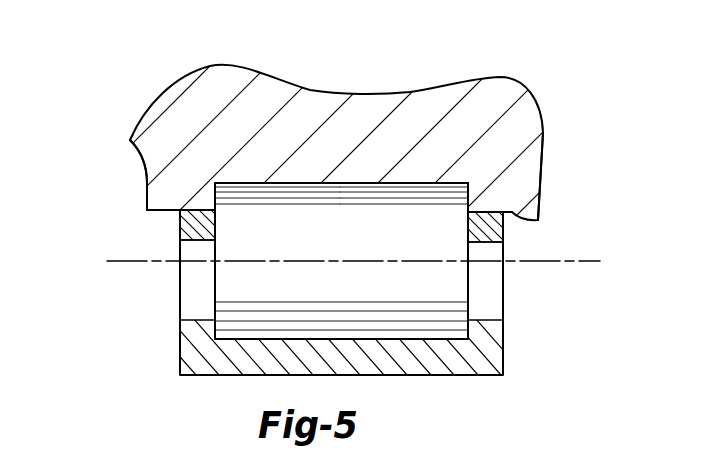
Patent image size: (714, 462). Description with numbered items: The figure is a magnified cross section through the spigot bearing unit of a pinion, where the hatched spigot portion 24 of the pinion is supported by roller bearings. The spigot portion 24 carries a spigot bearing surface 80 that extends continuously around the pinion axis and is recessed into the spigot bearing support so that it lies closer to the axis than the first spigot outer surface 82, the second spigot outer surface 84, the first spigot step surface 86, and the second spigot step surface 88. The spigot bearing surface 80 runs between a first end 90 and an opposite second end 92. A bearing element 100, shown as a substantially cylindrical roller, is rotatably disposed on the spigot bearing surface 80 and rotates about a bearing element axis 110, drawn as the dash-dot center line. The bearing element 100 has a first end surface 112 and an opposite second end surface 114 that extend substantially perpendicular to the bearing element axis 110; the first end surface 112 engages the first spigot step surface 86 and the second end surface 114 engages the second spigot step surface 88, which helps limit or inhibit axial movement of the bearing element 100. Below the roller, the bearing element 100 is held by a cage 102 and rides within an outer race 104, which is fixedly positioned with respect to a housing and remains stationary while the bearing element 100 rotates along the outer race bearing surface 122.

The spigot portion 24 is at (163, 87).
The spigot bearing surface 80 is at (342, 183).
The first spigot outer surface 82 is at (150, 226).
The second spigot outer surface 84 is at (544, 163).
The first spigot step surface 86 is at (228, 201).
The second spigot step surface 88 is at (468, 194).
The first end 90 is at (213, 182).
The second end 92 is at (470, 182).
The bearing element 100 is at (351, 245).
The cage 102 is at (488, 242).
The outer race 104 is at (475, 375).
The bearing element axis 110 is at (338, 262).
The first end surface 112 is at (215, 292).
The second end surface 114 is at (469, 288).
The outer race bearing surface 122 is at (330, 338).